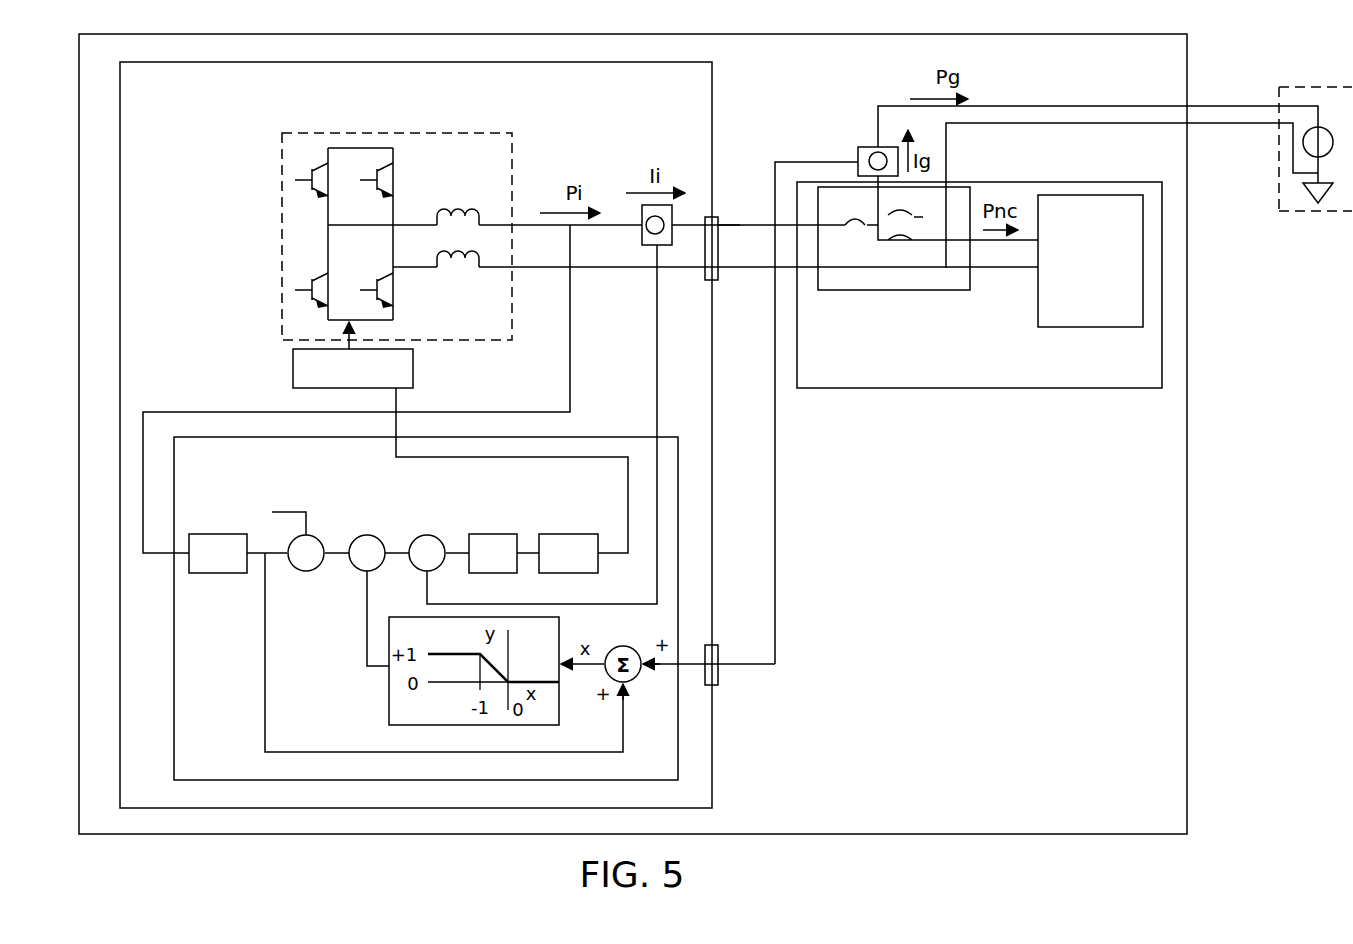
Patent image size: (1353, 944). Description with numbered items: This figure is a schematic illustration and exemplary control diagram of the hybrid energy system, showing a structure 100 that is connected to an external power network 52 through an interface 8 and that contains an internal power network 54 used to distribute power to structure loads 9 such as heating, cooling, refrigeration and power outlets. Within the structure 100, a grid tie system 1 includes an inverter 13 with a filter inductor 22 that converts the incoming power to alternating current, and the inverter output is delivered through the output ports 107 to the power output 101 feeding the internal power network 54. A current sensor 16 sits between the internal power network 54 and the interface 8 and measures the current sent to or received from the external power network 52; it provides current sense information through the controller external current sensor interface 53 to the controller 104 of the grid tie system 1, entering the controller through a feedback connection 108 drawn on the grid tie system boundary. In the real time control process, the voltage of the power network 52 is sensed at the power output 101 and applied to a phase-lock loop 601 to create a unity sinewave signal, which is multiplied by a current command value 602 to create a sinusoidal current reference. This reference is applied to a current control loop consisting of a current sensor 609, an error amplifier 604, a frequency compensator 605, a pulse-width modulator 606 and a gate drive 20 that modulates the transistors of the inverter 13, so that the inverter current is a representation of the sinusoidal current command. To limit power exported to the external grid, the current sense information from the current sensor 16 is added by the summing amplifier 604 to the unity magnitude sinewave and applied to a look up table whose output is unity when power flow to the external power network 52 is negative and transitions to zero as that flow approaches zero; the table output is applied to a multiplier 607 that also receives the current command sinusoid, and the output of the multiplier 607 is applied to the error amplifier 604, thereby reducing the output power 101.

The grid tie system 1 is at (712, 778).
The interface 8 is at (1238, 104).
The structure loads 9 is at (1112, 330).
The inverter 13 is at (406, 130).
The current sensor 16 is at (865, 147).
The gate drive 20 is at (413, 372).
The filter inductor 22 is at (467, 205).
The external power network 52 is at (1322, 84).
The controller external current sensor interface 53 is at (775, 537).
The internal power network 54 is at (1018, 392).
The structure 100 is at (1188, 637).
The power output 101 is at (747, 224).
The controller 104 is at (621, 437).
The output ports 107 is at (718, 253).
The feedback connection 108 is at (718, 672).
The phase-lock loop 601 is at (220, 573).
The current command value 602 is at (237, 493).
The error amplifier 604 is at (432, 533).
The frequency compensator 605 is at (496, 533).
The pulse-width modulator 606 is at (572, 533).
The multiplier 607 is at (370, 533).
The current sensor 609 is at (640, 237).